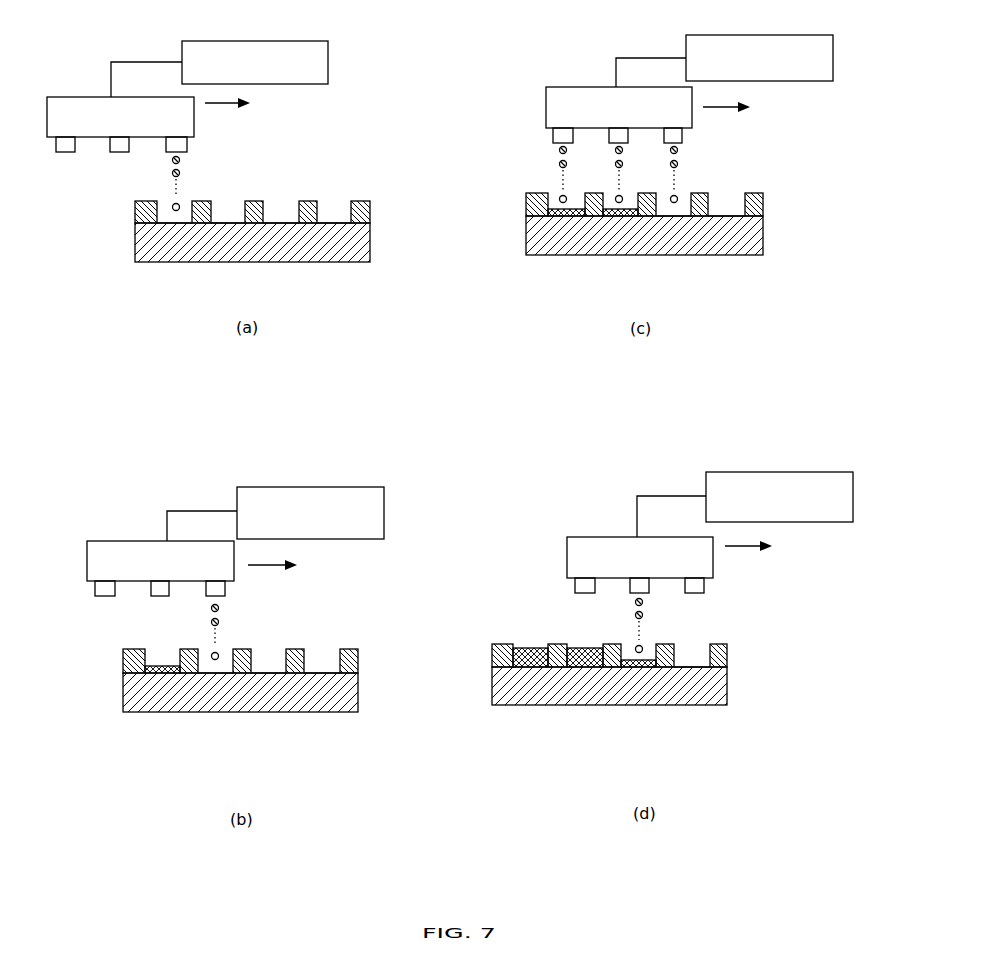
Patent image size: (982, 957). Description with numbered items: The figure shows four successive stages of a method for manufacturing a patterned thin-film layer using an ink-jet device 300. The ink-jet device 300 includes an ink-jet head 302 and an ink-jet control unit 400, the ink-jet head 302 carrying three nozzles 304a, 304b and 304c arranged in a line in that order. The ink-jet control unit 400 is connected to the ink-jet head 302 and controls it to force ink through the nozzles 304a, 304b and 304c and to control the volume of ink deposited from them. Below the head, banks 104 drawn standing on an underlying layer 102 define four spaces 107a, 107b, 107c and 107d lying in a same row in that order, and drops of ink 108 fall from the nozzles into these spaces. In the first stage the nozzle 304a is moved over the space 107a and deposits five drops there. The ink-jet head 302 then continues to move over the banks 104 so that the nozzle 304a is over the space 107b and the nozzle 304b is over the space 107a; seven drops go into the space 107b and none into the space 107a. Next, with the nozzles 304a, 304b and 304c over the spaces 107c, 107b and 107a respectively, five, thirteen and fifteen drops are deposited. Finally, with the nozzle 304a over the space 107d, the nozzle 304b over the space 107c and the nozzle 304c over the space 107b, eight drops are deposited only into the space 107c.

The substrate 102 is at (352, 257).
The banks 104 is at (362, 208).
The space 107a is at (163, 208).
The space 107b is at (228, 203).
The space 107c is at (275, 212).
The space 107d is at (338, 215).
The ink droplet 108 is at (181, 173).
The ink-jet device 300 is at (92, 54).
The ink-jet head 302 is at (94, 103).
The nozzle 304a is at (178, 145).
The nozzle 304b is at (122, 144).
The nozzle 304c is at (70, 144).
The ink-jet control unit 400 is at (237, 41).